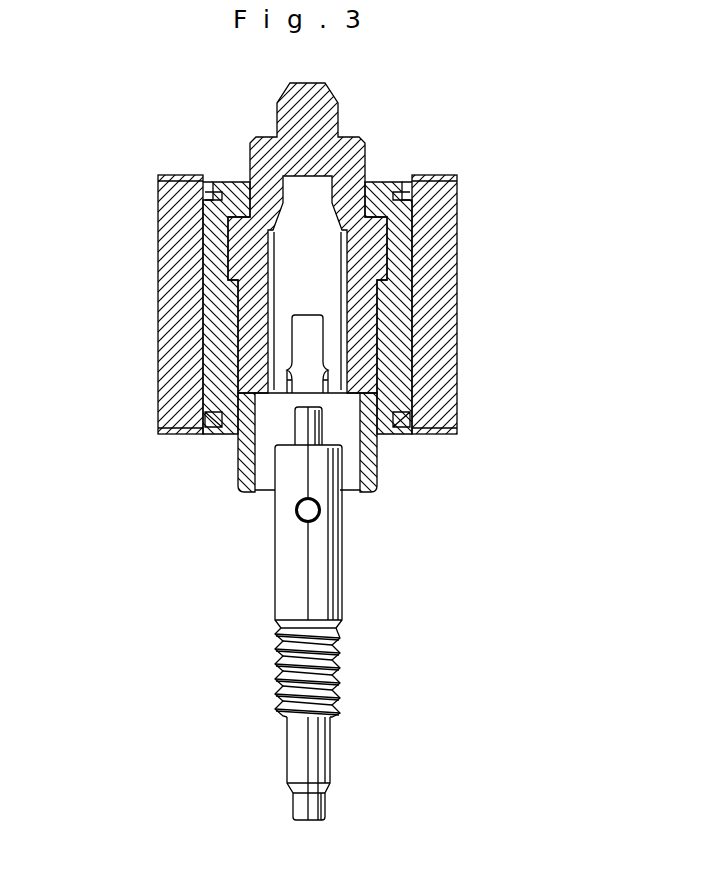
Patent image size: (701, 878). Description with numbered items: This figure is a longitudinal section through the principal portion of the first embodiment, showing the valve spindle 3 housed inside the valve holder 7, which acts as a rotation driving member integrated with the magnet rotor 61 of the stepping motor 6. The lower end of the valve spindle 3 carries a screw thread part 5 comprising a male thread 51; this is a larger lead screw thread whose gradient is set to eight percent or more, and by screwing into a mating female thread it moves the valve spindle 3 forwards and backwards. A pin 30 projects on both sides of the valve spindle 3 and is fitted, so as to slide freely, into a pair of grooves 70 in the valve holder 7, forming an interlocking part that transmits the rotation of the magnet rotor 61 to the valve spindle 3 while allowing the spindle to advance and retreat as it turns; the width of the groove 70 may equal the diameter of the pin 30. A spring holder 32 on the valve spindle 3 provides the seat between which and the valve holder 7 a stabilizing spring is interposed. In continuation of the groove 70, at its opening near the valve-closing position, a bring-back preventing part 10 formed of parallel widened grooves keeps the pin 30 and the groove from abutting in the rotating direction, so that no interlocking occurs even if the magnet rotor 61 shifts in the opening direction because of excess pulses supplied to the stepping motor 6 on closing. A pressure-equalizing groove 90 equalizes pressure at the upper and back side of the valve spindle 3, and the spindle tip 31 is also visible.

The valve spindle 3 is at (301, 613).
The screw thread part 5 is at (364, 671).
The stepping motor 6 is at (158, 190).
The valve holder 7 is at (364, 152).
The bring-back preventing part 10 is at (283, 385).
The pin 30 is at (293, 510).
The rod tip 31 is at (300, 805).
The spring holder 32 is at (297, 430).
The male thread 51 is at (328, 666).
The magnet rotor 61 is at (158, 227).
The groove 70 is at (307, 338).
The pressure-equalizing groove 90 is at (278, 292).